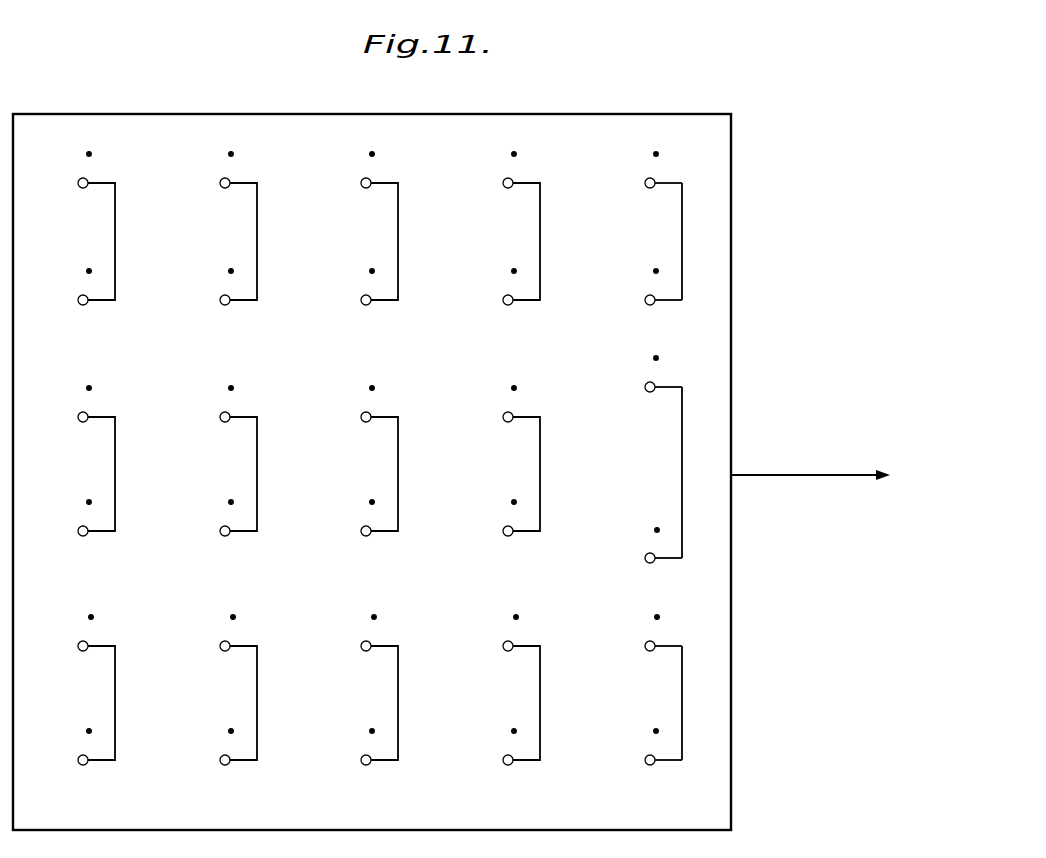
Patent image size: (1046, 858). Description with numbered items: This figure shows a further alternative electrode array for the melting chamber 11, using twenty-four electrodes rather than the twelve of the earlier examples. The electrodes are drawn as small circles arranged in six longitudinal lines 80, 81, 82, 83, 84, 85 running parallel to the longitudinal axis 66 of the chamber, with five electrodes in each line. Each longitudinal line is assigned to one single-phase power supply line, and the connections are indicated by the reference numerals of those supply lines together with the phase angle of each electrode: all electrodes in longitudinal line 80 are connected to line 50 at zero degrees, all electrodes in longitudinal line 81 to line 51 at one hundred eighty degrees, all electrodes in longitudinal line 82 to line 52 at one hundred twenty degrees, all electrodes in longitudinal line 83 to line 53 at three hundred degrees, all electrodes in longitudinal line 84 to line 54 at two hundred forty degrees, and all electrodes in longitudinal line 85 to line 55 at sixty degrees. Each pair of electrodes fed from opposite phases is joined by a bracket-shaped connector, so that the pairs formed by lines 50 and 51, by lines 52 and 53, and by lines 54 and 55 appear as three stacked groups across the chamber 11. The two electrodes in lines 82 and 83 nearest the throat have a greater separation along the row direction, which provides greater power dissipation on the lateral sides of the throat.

The melting chamber 11 is at (101, 108).
The power supply line 50 is at (89, 176).
The power supply line 51 is at (88, 305).
The power supply line 52 is at (89, 411).
The power supply line 53 is at (88, 536).
The power supply line 54 is at (89, 640).
The power supply line 55 is at (88, 765).
The longitudinal line 80 is at (692, 186).
The longitudinal line 81 is at (692, 300).
The longitudinal line 82 is at (693, 391).
The longitudinal line 83 is at (693, 557).
The longitudinal line 84 is at (693, 648).
The longitudinal line 85 is at (693, 762).
The longitudinal axis 66 is at (772, 478).